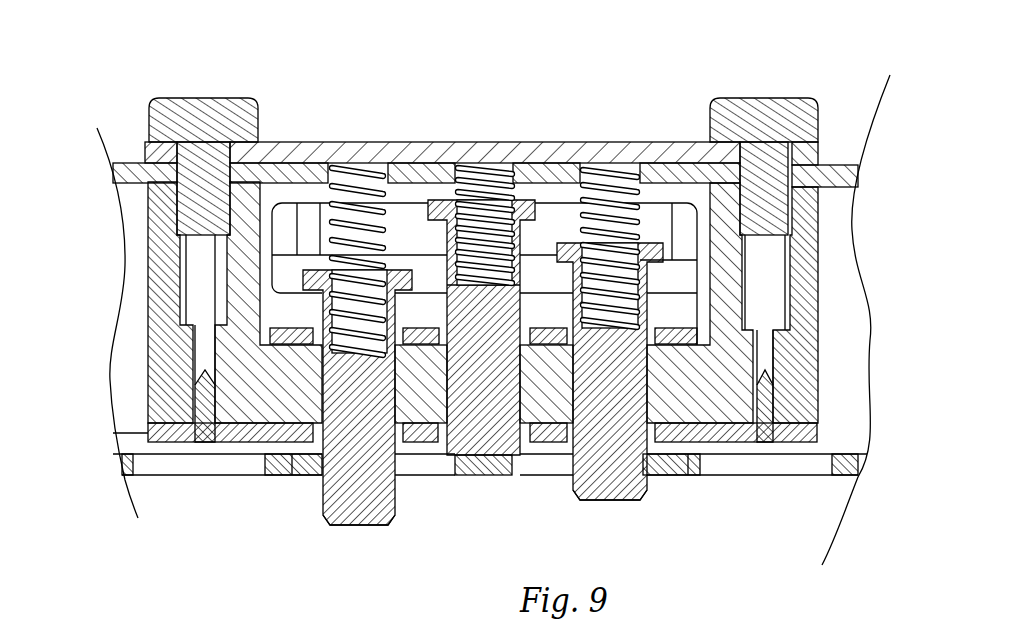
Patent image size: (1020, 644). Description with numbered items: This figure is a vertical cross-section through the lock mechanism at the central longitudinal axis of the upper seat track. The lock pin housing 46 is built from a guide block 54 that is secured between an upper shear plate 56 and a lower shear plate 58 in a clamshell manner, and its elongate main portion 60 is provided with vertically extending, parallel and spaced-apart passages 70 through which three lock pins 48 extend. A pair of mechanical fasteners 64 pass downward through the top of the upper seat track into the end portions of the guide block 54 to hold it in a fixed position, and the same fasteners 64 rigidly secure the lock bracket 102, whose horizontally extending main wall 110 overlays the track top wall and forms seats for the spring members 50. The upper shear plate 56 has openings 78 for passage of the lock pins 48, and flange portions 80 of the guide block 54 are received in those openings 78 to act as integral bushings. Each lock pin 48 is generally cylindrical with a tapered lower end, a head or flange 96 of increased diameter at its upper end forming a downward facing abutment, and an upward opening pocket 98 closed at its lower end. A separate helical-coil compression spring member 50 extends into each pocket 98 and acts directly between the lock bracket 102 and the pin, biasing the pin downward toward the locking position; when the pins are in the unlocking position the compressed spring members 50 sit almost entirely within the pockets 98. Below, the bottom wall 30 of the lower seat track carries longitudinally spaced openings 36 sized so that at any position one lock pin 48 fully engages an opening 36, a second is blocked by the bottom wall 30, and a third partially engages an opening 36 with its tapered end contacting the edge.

The bottom wall 30 is at (845, 505).
The openings 36 is at (258, 456).
The lock pin housing 46 is at (146, 213).
The lock pins 48 is at (377, 527).
The spring members 50 is at (346, 165).
The guide block 54 is at (143, 388).
The upper shear plate 56 is at (268, 318).
The lower shear plate 58 is at (292, 472).
The main portion 60 is at (183, 248).
The mechanical fasteners 64 is at (196, 98).
The passages 70 is at (332, 523).
The openings 78 is at (688, 447).
The flange portions 80 is at (553, 332).
The head or flange 96 is at (405, 158).
The pocket 98 is at (495, 222).
The lock bracket 102 is at (668, 141).
The main wall 110 is at (648, 142).